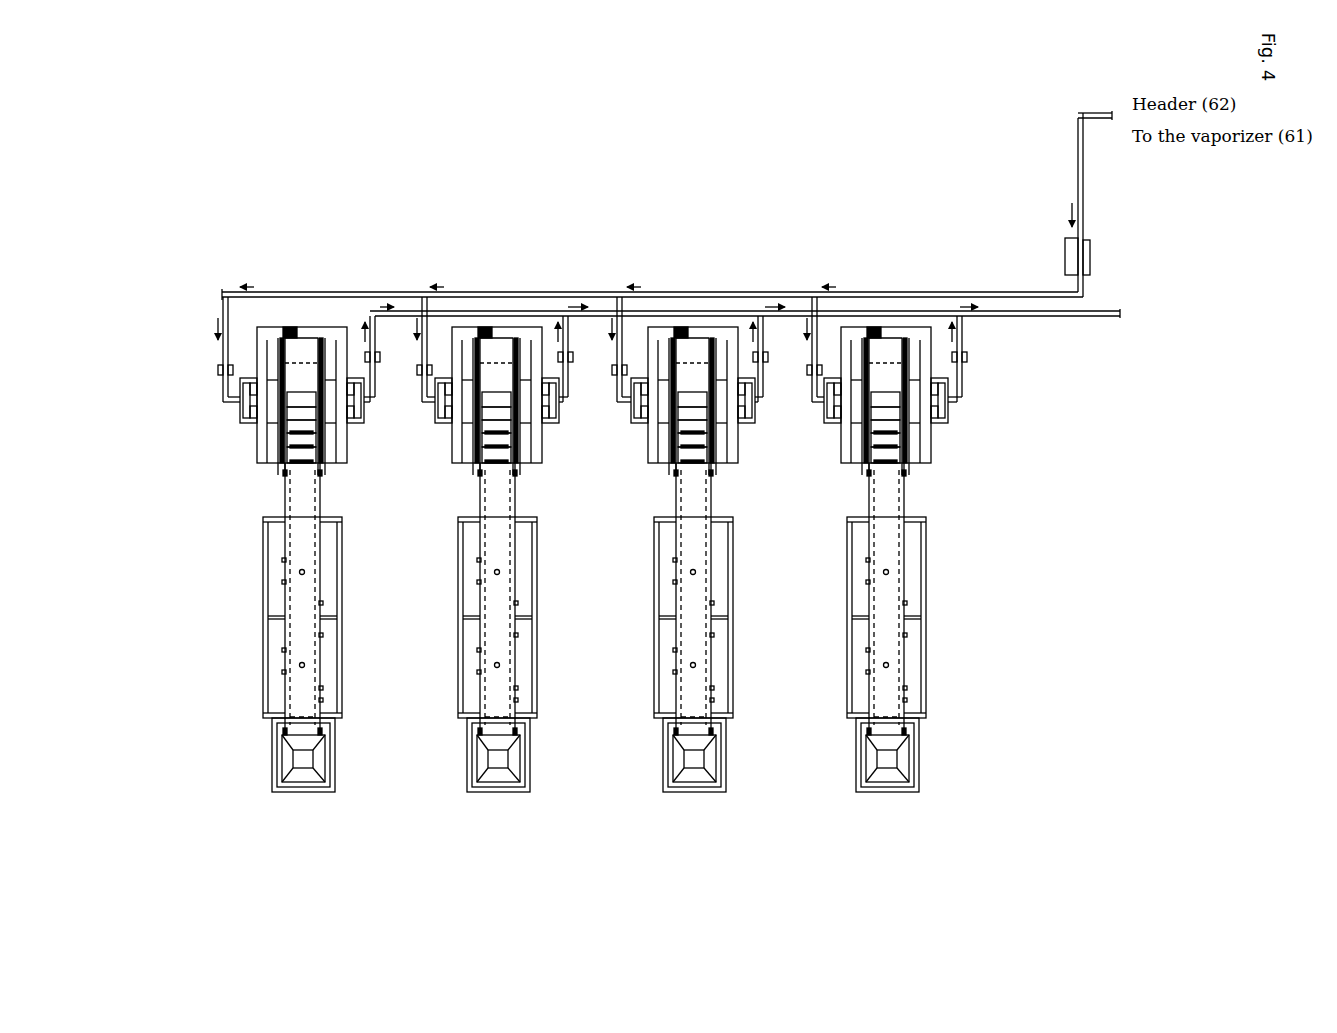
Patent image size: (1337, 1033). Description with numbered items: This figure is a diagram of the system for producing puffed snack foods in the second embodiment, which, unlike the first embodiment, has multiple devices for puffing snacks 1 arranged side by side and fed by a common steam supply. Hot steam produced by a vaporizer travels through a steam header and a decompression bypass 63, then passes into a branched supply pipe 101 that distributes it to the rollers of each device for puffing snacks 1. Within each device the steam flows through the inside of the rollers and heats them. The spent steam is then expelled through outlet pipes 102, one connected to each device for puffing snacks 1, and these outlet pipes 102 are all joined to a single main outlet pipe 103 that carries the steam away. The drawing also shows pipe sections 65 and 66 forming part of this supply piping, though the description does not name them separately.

The device for puffing snacks 1 is at (338, 775).
The decompression bypass 63 is at (1090, 258).
The supply pipe from header 65 is at (1076, 150).
The supply header pipe 66 is at (535, 292).
The branched supply pipe 101 is at (223, 312).
The outlet pipe 102 is at (375, 402).
The main outlet pipe 103 is at (1008, 325).